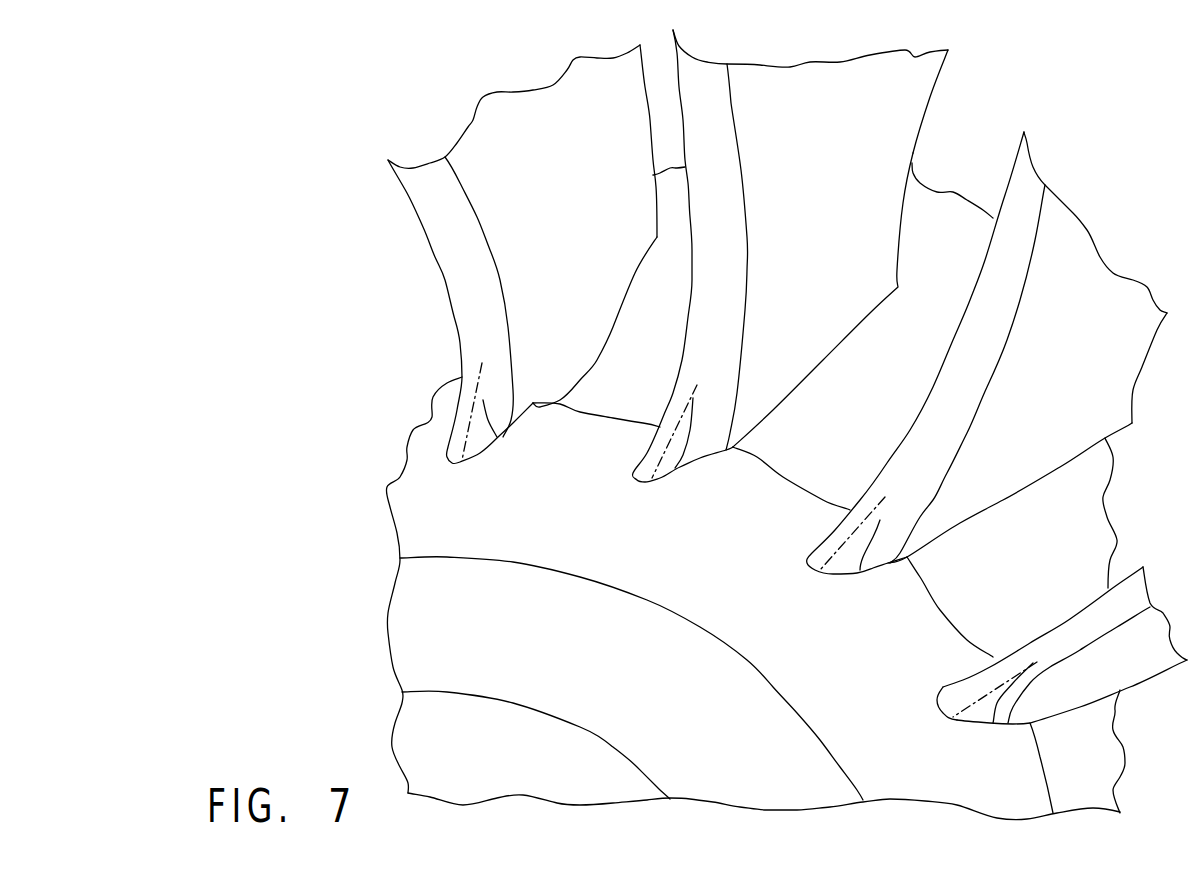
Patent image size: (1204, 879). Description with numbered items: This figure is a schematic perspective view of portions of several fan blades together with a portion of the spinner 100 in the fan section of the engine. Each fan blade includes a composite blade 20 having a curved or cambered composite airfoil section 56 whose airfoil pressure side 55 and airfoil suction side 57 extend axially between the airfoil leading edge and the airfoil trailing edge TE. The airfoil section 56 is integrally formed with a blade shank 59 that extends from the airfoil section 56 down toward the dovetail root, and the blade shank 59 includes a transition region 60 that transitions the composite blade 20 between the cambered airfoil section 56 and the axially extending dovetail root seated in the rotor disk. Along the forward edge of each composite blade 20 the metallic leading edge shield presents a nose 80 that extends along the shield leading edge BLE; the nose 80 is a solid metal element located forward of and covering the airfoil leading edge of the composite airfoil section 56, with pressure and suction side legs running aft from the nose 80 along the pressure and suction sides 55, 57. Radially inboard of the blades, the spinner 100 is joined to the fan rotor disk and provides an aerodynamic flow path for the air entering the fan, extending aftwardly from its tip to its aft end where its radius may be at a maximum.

The composite blade 20 is at (807, 62).
The airfoil pressure side 55 is at (1072, 622).
The composite airfoil section 56 is at (907, 85).
The airfoil suction side 57 is at (1073, 348).
The blade shank 59 is at (988, 492).
The transition region 60 is at (917, 527).
The nose 80 is at (825, 533).
The spinner 100 is at (420, 720).
The shield leading edge BLE is at (689, 306).
The airfoil trailing edge TE is at (925, 118).